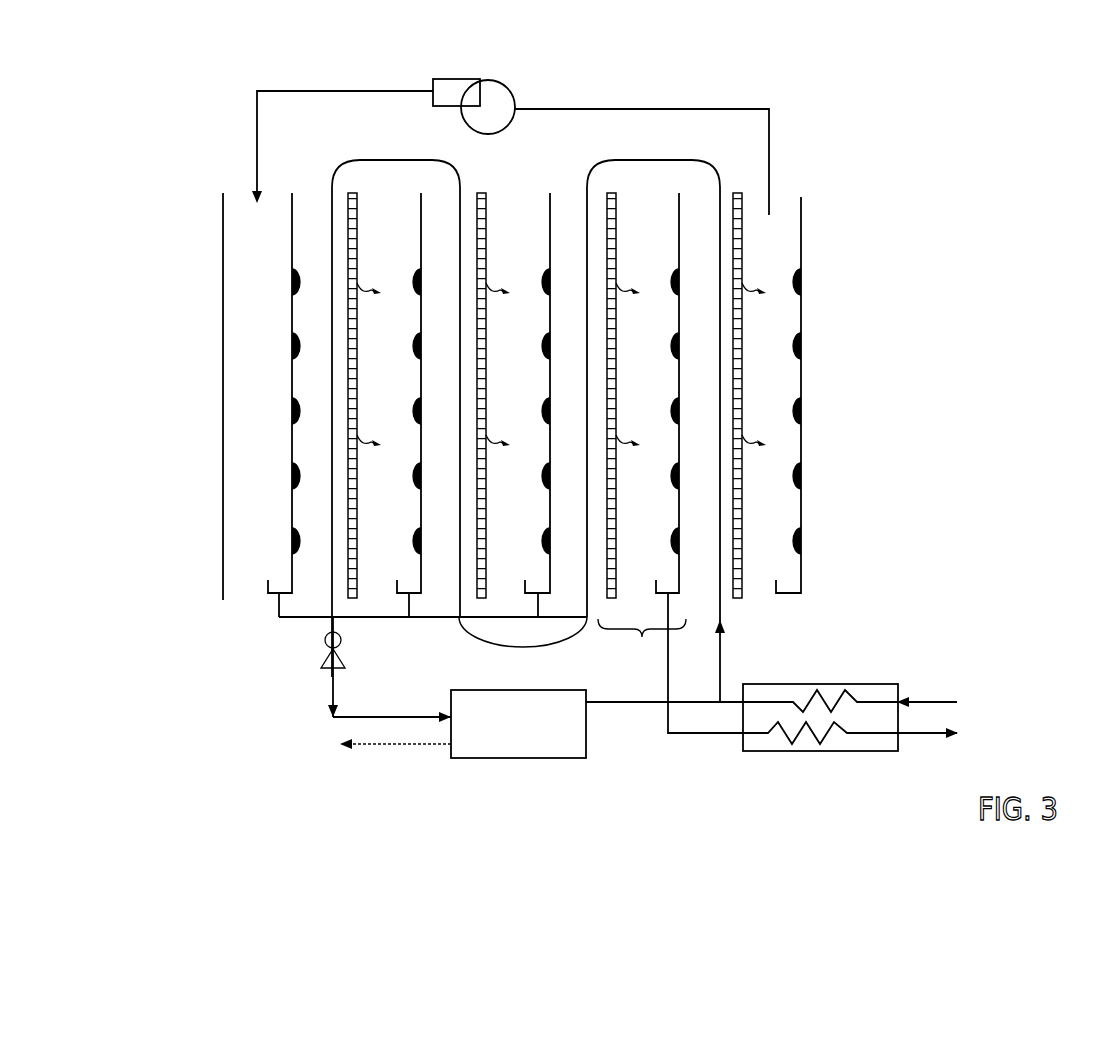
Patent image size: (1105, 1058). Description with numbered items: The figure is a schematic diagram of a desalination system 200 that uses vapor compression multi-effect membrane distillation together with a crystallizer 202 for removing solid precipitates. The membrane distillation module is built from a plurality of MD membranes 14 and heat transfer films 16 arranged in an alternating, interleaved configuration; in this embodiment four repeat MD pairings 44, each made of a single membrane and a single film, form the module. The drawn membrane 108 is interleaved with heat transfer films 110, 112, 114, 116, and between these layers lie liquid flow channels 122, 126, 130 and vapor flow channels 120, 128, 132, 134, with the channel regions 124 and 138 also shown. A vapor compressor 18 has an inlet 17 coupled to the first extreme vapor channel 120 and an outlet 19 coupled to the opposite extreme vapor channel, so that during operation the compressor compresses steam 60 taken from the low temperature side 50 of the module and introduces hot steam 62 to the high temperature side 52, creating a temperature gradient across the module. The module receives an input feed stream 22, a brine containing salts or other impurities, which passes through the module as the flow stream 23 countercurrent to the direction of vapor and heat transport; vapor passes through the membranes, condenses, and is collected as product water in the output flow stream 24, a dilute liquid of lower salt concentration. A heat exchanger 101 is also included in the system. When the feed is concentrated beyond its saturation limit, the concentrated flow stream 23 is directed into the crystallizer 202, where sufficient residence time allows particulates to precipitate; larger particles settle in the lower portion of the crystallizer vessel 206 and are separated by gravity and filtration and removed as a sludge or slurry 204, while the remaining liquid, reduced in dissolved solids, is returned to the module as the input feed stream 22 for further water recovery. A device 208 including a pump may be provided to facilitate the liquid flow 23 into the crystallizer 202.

The desalination system 200 is at (887, 93).
The low temperature side 50 is at (865, 357).
The high temperature side 52 is at (197, 357).
The hot steam 62 is at (340, 91).
The outlet of the vapor compressor 19 is at (433, 90).
The vapor compressor 18 is at (500, 81).
The inlet of the vapor compressor 17 is at (515, 100).
The steam 60 is at (633, 109).
The flow stream 23 is at (356, 160).
The heat transfer film 16 is at (679, 207).
The MD membrane 14 is at (737, 193).
The heat transfer film 116 is at (292, 240).
The heat transfer film 114 is at (421, 240).
The heat transfer film 112 is at (550, 240).
The heat transfer film 110 is at (679, 240).
The chamber 138 is at (270, 396).
The vapor flow channel 134 is at (332, 325).
The vapor flow channel 132 is at (408, 390).
The liquid flow channel 130 is at (460, 325).
The vapor flow channel 128 is at (533, 385).
The liquid flow channel 126 is at (587, 325).
The chamber 124 is at (661, 385).
The liquid flow channel 122 is at (720, 325).
The first extreme vapor channel 120 is at (789, 378).
The MD membrane 108 is at (360, 519).
The device including a pump 208 is at (320, 663).
The output flow stream 24 is at (432, 617).
The crystallizer vessel 206 is at (518, 690).
The crystallizer 202 is at (525, 758).
The sludge or slurry 204 is at (401, 744).
The repeat MD pairing 44 is at (642, 641).
The input feed stream 22 is at (722, 645).
The heat exchanger 101 is at (821, 752).